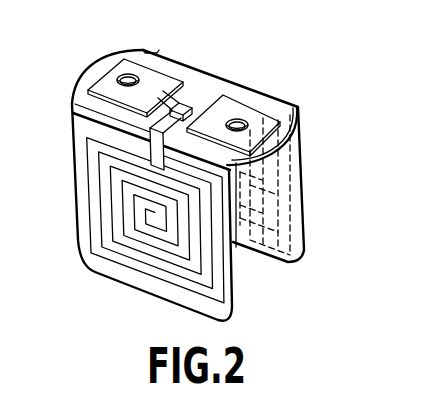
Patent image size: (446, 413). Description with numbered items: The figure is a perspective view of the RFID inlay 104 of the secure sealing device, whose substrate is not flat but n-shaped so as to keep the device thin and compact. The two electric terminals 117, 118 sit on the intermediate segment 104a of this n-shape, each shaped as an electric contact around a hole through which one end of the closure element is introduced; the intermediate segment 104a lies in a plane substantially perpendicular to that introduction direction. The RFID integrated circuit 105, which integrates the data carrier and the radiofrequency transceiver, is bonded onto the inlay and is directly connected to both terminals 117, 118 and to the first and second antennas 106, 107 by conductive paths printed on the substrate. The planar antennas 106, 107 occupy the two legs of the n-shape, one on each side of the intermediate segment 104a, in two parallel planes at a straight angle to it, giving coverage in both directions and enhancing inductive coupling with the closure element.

The RFID inlay 104 is at (320, 131).
The intermediate segment 104a is at (90, 77).
The RFID integrated circuit 105 is at (185, 90).
The first antenna 106 is at (117, 262).
The second antenna 107 is at (273, 245).
The first electric terminal 117 is at (268, 118).
The second electric terminal 118 is at (160, 77).